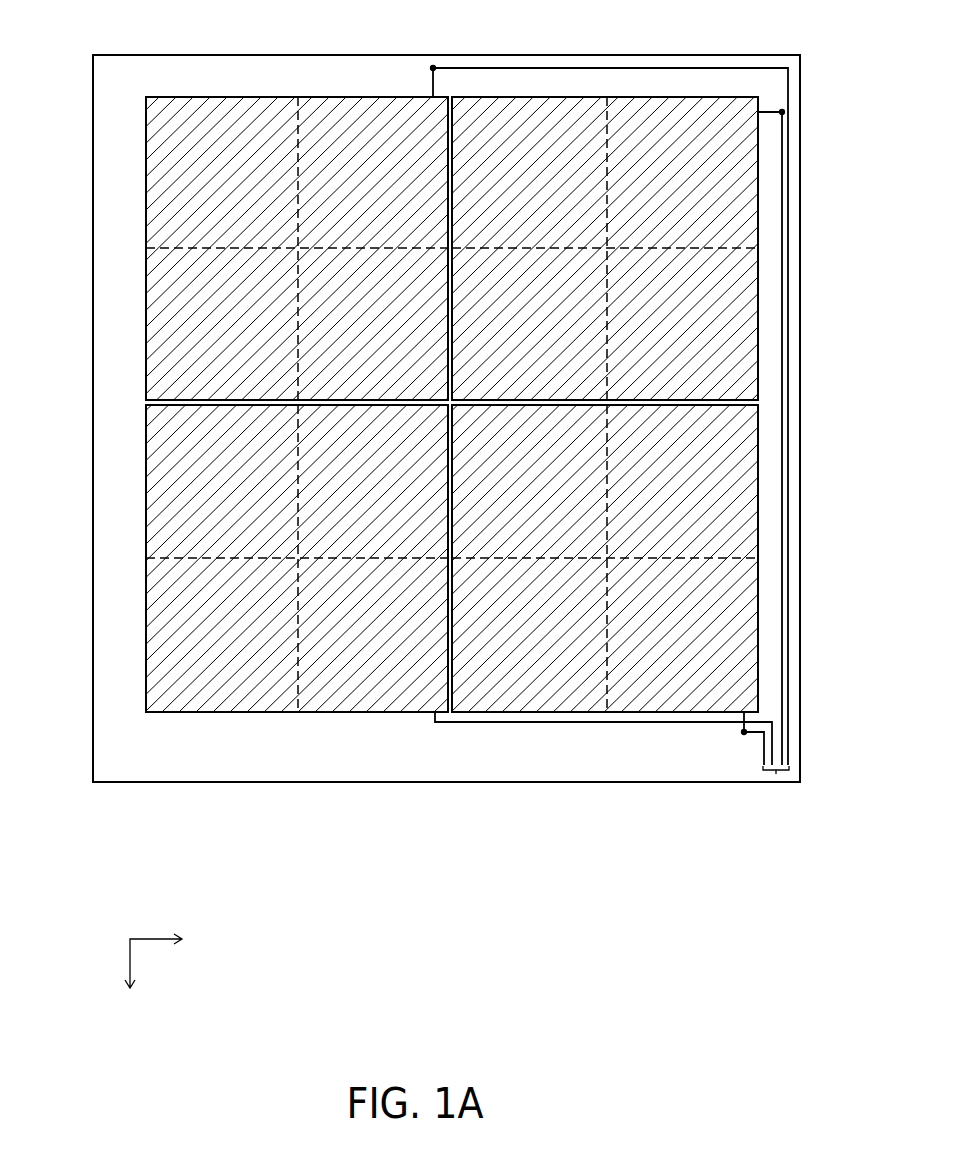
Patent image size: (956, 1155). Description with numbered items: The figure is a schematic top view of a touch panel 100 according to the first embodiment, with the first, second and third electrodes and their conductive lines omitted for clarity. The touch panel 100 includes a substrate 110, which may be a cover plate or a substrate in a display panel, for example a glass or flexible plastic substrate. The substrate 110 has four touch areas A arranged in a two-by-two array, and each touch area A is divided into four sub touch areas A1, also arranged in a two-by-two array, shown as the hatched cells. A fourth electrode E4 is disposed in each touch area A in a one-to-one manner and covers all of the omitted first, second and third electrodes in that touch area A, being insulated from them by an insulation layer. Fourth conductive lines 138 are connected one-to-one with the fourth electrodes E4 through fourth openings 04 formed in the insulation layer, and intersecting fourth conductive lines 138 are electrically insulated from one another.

The touch panel 100 is at (729, 1088).
The substrate 110 is at (123, 72).
The sub touch areas A1 is at (241, 190).
The touch areas A is at (758, 426).
The fourth electrodes E4 is at (446, 404).
The fourth openings 04 is at (433, 60).
The fourth conductive lines 138 is at (776, 774).